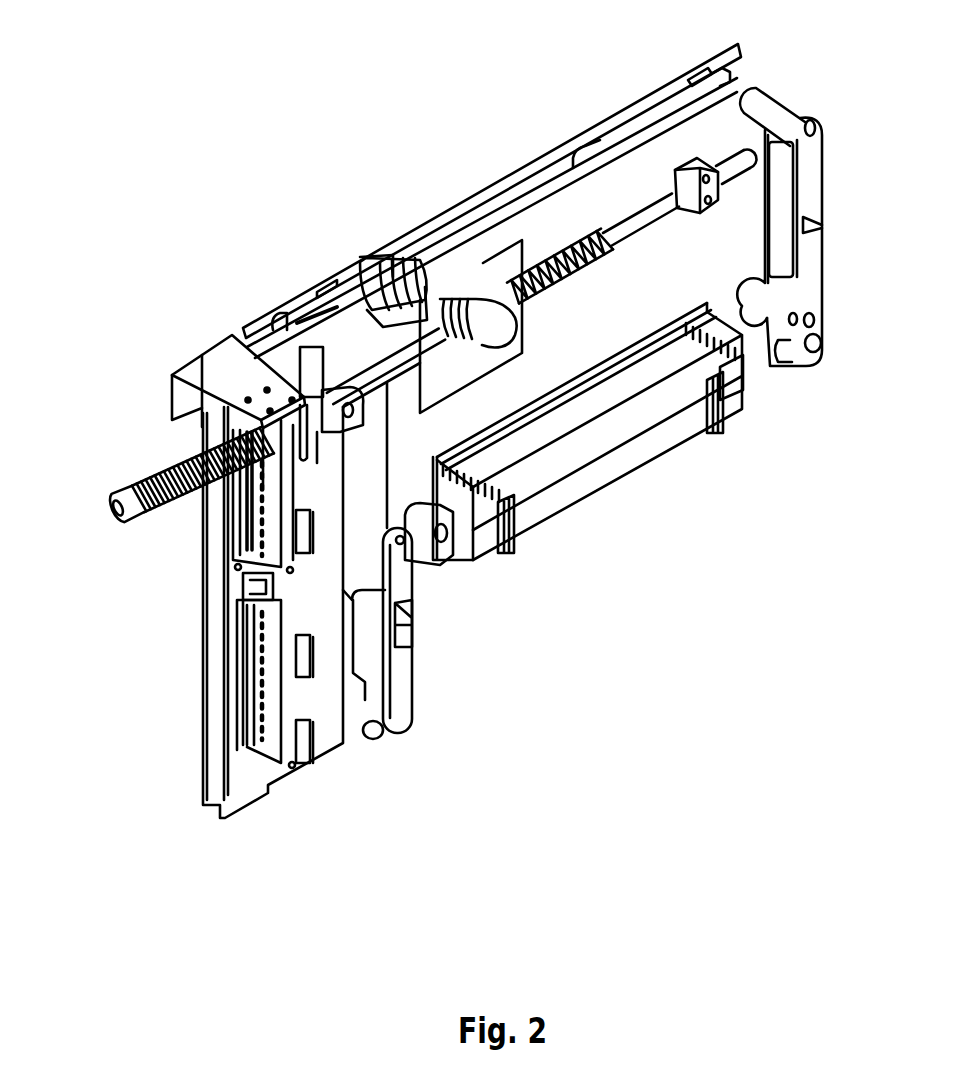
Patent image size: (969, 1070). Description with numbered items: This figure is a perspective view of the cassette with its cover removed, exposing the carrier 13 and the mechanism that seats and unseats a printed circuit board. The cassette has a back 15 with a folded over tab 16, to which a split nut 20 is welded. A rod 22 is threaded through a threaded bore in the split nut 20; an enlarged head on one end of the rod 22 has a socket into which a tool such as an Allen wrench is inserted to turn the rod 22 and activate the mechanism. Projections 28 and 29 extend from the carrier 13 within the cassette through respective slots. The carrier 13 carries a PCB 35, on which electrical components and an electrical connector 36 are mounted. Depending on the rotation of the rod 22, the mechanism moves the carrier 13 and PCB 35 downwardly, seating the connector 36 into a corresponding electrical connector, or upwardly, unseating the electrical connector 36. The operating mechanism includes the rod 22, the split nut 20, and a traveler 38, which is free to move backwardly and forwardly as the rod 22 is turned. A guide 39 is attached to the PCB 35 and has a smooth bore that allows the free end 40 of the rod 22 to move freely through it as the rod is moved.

The carrier 13 is at (323, 712).
The back 15 is at (487, 210).
The folded over tab 16 is at (225, 372).
The split nut 20 is at (287, 435).
The rod 22 is at (152, 473).
The projection 28 is at (408, 620).
The projection 29 is at (792, 362).
The PCB 35 is at (733, 213).
The electrical connector 36 is at (602, 435).
The traveler 38 is at (498, 317).
The guide 39 is at (697, 170).
The free end 40 is at (741, 157).